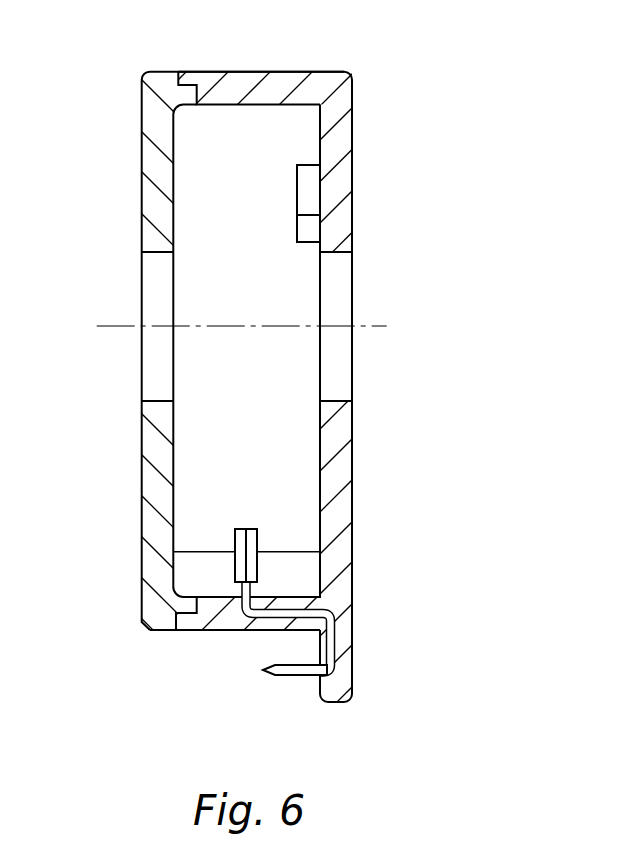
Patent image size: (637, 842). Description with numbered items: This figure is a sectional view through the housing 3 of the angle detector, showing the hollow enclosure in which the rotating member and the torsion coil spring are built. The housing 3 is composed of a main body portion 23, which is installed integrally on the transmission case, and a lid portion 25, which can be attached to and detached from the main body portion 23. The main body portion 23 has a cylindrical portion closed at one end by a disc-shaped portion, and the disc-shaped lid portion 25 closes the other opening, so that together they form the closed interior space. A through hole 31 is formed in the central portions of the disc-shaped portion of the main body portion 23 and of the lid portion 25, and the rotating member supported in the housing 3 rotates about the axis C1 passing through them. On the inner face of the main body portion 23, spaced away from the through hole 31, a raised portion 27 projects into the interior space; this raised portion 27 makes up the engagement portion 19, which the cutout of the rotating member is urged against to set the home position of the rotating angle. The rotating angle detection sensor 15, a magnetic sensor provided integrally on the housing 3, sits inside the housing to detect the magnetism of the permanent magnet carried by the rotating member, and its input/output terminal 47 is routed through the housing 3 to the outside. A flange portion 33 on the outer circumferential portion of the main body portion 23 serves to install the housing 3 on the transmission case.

The housing 3 is at (353, 98).
The main body portion 23 is at (264, 72).
The lid portion 25 is at (142, 88).
The engagement portion 19 is at (380, 203).
The raised portion 27 is at (313, 193).
The axis C1 is at (373, 326).
The through hole 31 is at (172, 401).
The rotating angle detection sensor 15 is at (257, 537).
The flange portion 33 is at (352, 680).
The input/output terminal 47 is at (283, 673).